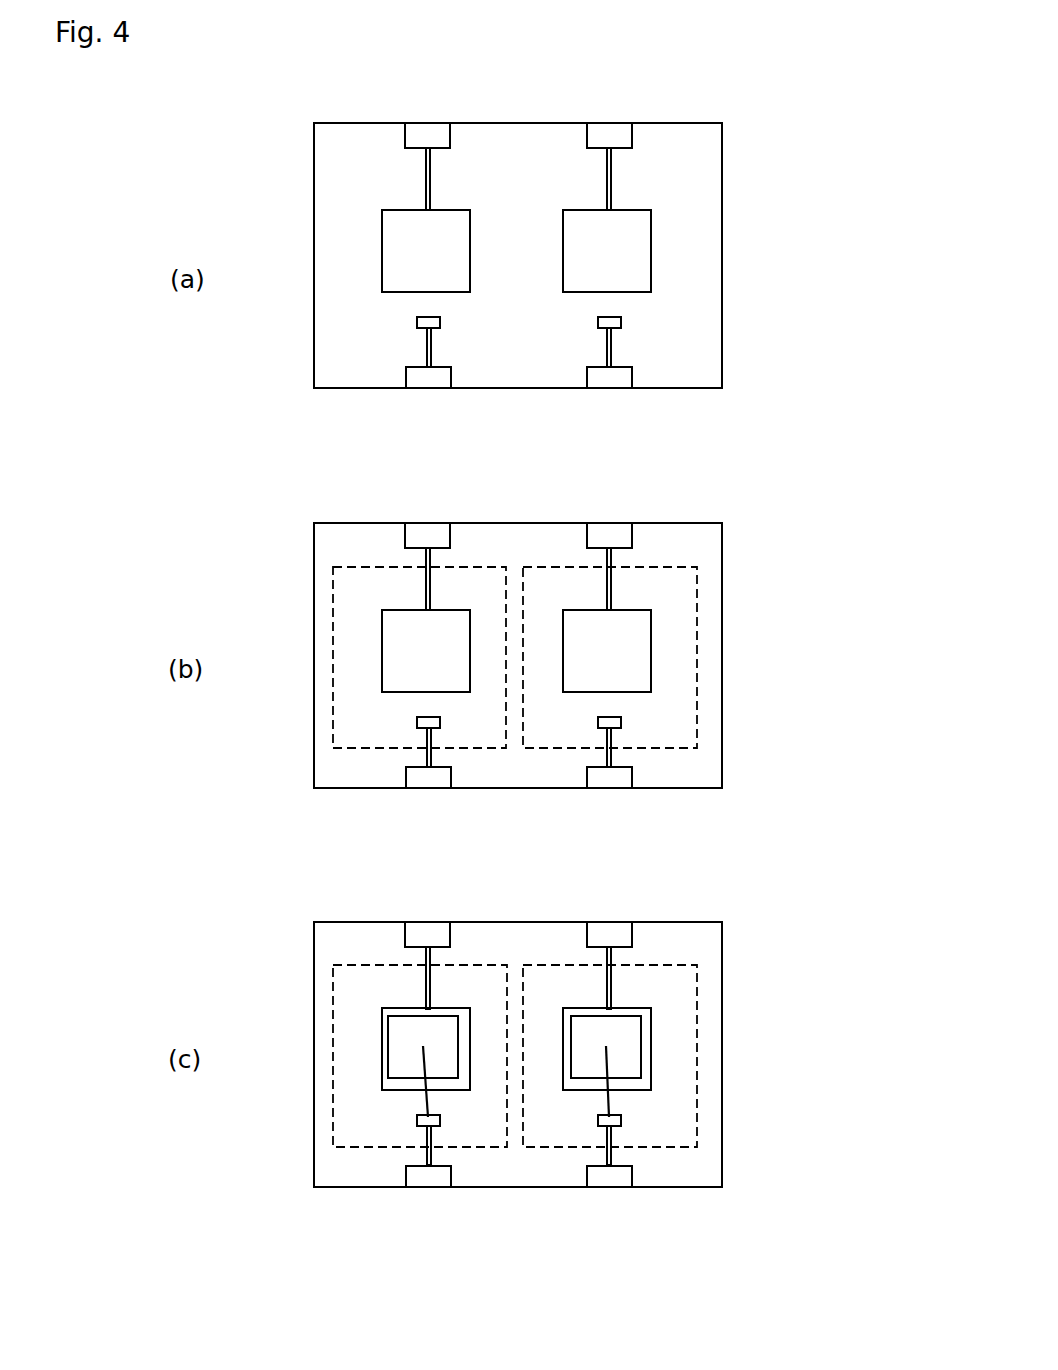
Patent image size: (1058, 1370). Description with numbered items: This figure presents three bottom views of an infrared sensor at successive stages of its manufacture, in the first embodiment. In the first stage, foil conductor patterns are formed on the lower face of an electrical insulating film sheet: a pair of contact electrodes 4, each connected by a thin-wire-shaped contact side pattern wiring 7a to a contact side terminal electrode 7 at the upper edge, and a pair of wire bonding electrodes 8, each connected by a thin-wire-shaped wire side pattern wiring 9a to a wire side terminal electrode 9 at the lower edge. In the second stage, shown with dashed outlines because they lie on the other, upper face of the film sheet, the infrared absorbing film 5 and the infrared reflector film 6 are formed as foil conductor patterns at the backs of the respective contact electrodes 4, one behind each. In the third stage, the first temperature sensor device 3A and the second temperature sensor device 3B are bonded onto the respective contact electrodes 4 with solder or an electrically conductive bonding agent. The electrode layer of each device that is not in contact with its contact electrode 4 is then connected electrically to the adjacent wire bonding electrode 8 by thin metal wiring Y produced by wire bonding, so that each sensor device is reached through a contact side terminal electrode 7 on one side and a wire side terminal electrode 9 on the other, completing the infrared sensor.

The contact side terminal electrode 7 is at (425, 132).
The contact side pattern wiring 7a is at (426, 180).
The contact electrode 4 is at (395, 248).
The wire bonding electrode 8 is at (428, 320).
The wire side pattern wiring 9a is at (427, 337).
The wire side terminal electrode 9 is at (428, 382).
The infrared absorbing film 5 is at (333, 676).
The infrared reflector film 6 is at (697, 676).
The first temperature sensor device 3A is at (452, 1049).
The second temperature sensor device 3B is at (577, 1049).
The thin metal wiring Y is at (425, 1065).